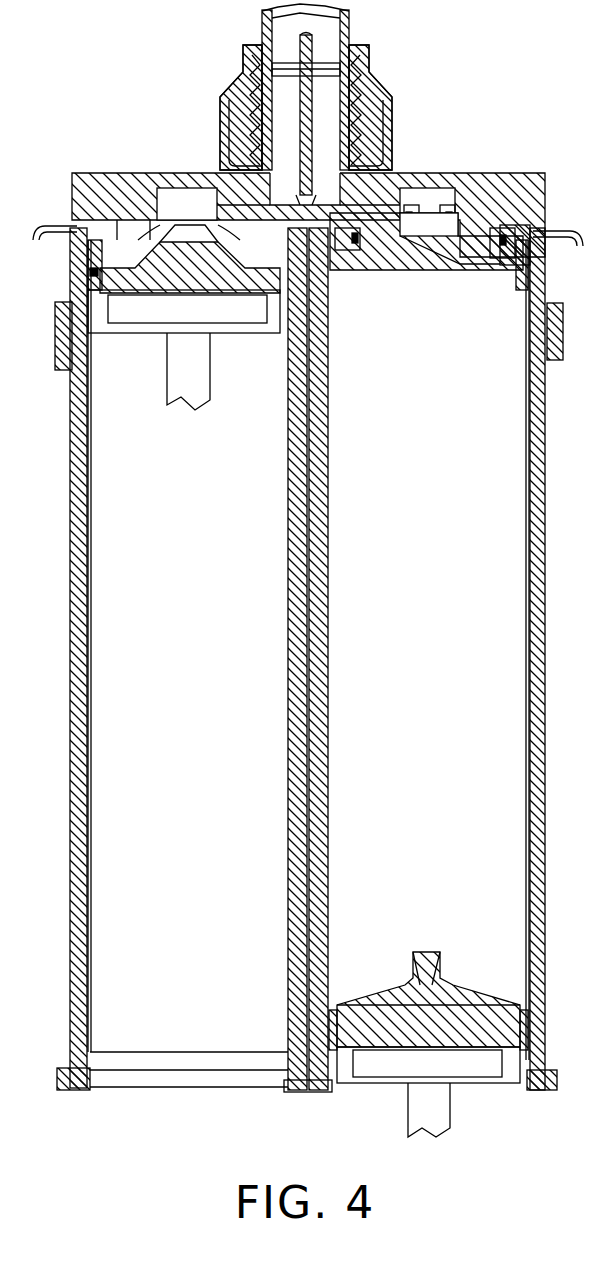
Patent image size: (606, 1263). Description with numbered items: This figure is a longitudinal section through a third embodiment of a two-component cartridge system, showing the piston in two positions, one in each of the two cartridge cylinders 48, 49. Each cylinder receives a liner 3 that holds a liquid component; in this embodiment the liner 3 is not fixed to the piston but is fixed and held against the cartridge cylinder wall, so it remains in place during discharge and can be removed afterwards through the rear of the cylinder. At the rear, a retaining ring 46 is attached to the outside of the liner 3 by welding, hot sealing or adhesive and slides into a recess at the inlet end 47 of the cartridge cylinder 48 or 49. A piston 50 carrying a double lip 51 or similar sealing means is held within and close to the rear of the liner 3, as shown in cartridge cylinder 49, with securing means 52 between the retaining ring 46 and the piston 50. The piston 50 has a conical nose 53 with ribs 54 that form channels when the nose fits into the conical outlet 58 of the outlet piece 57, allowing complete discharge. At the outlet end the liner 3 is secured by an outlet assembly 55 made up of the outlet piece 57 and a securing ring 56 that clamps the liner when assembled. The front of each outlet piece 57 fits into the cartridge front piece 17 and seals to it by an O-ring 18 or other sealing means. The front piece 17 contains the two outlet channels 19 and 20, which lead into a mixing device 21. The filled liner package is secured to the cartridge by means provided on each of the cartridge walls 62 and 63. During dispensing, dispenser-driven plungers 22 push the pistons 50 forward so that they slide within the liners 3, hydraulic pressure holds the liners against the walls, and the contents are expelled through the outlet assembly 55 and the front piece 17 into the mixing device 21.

The liner 3 is at (90, 578).
The front piece 17 is at (536, 170).
The O-ring 18 is at (455, 205).
The outlet channel 19 is at (277, 130).
The outlet channel 20 is at (328, 128).
The mixing device 21 is at (349, 22).
The plunger 22 is at (437, 1103).
The retaining ring 46 is at (62, 1090).
The inlet end 47 is at (292, 1096).
The cartridge cylinder 48 is at (66, 512).
The cartridge cylinder 49 is at (548, 530).
The piston 50 is at (376, 962).
The double lip 51 is at (540, 1015).
The securing means 52 is at (548, 1058).
The conical nose 53 is at (438, 950).
The ribs 54 is at (415, 950).
The outlet assembly 55 is at (448, 280).
The securing ring 56 is at (540, 232).
The outlet piece 57 is at (506, 262).
The conical outlet 58 is at (398, 262).
The wall 62 is at (80, 396).
The wall 63 is at (548, 392).